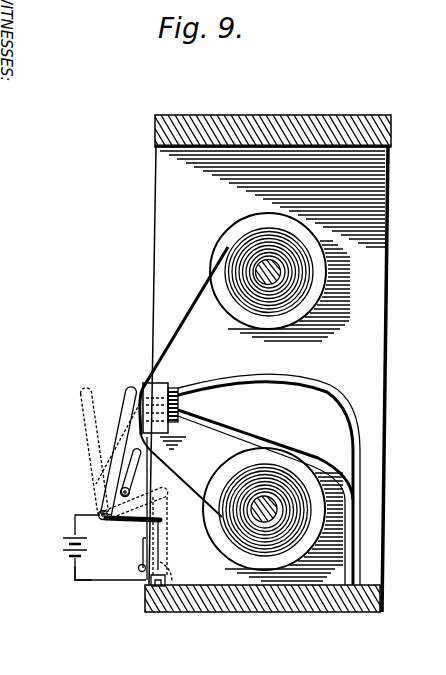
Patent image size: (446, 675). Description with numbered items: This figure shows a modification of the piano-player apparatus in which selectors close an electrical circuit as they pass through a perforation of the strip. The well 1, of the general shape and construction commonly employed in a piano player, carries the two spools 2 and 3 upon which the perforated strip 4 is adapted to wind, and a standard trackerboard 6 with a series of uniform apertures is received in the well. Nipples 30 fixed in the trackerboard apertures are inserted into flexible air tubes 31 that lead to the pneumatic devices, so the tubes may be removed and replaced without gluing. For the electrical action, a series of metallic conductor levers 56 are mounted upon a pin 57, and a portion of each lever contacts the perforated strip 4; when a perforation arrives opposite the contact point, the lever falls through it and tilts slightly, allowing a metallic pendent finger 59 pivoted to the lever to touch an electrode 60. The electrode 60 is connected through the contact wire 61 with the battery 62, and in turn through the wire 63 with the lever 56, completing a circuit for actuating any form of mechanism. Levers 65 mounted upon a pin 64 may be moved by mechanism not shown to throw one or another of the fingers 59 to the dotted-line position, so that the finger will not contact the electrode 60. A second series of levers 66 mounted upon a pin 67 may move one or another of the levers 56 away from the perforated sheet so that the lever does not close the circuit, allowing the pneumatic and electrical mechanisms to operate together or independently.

The well 1 is at (388, 195).
The spool 2 is at (320, 280).
The spool 3 is at (300, 522).
The perforated strip 4 is at (193, 312).
The trackerboard 6 is at (148, 392).
The nipples 30 is at (200, 397).
The flexible air tubes 31 is at (277, 430).
The metallic conductor lever 56 is at (126, 429).
The pin 57 is at (100, 507).
The metallic pendent finger 59 is at (162, 590).
The electrode 60 is at (146, 591).
The contact wire 61 is at (82, 581).
The battery 62 is at (68, 549).
The wire 63 is at (73, 522).
The pin 64 is at (138, 568).
The lever 65 is at (140, 552).
The lever 66 is at (124, 470).
The pin 67 is at (166, 494).